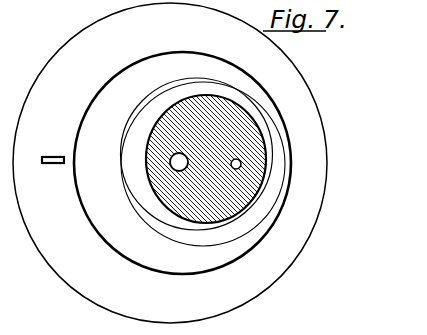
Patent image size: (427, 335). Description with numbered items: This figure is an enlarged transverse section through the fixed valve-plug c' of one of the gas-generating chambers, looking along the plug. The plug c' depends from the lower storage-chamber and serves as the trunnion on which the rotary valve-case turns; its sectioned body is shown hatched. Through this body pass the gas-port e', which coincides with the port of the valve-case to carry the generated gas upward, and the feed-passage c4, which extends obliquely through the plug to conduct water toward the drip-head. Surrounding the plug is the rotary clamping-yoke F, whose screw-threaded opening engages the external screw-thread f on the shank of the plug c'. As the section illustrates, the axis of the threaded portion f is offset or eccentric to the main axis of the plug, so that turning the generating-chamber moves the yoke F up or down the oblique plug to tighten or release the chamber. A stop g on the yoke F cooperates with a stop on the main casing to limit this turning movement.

The clamping-yoke F is at (170, 163).
The stop g is at (63, 154).
The fixed valve-plug c' is at (218, 154).
The external screw-thread f is at (250, 200).
The gas-port e' is at (156, 158).
The feed-passage c4 is at (241, 159).